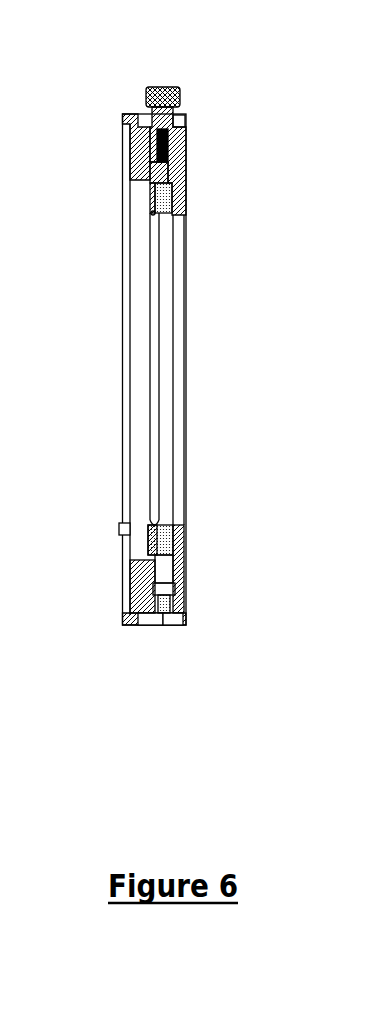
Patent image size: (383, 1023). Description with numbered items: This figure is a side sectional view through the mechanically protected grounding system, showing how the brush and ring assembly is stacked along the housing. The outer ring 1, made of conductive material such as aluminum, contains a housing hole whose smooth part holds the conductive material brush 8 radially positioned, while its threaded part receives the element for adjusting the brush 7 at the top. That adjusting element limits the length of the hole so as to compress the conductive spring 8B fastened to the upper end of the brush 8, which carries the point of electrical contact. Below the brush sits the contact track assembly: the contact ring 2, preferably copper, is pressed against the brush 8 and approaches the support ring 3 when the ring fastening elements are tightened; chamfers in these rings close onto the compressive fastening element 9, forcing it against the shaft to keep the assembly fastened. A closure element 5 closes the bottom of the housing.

The outer ring 1 is at (137, 152).
The contact ring 2 is at (175, 530).
The support ring 3 is at (140, 547).
The closure element 5 is at (163, 595).
The element for adjusting the brush 7 is at (158, 97).
The conductive material brush 8 is at (172, 163).
The conductive spring 8B is at (163, 130).
The compressive fastening element 9 is at (147, 520).